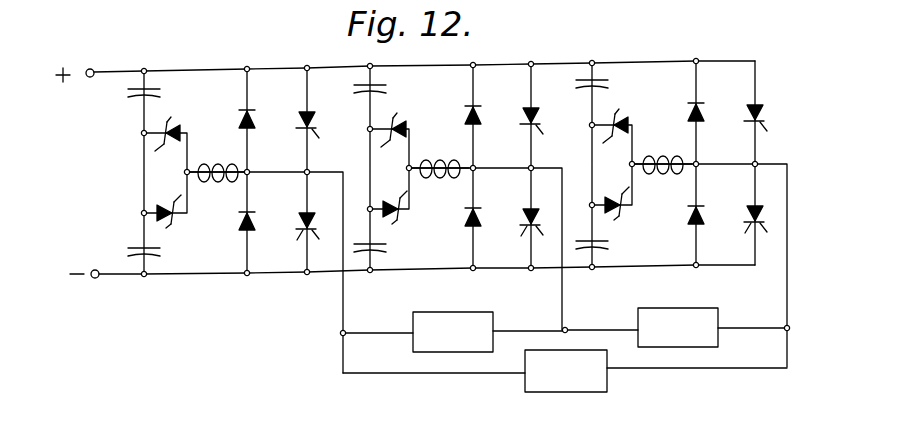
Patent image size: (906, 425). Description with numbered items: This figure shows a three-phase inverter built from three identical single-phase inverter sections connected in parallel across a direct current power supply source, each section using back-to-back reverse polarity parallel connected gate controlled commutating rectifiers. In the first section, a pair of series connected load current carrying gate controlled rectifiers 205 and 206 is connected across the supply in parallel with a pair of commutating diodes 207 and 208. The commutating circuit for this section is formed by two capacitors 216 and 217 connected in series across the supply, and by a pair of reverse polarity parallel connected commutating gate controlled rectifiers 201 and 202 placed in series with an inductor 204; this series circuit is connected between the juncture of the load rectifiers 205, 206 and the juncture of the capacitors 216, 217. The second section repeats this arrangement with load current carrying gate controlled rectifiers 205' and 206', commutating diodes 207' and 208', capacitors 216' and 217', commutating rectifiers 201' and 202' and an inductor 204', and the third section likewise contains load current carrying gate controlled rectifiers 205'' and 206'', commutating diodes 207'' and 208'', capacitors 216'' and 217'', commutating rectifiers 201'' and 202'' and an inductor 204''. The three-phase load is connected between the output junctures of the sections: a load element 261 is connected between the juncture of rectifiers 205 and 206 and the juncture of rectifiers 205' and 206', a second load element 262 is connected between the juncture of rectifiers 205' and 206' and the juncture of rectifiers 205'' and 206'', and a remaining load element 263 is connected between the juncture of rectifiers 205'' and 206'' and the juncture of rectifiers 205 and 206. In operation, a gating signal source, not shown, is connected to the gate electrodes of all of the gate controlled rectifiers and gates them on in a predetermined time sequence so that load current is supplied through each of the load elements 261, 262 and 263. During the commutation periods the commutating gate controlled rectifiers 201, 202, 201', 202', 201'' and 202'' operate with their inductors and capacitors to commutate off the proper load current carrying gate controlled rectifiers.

The commutating gate controlled rectifier 201 is at (179, 125).
The commutating gate controlled rectifier 202 is at (183, 218).
The inductor 204 is at (217, 160).
The load current carrying gate controlled rectifier 205 is at (324, 124).
The load current carrying gate controlled rectifier 206 is at (295, 238).
The commutating diode 207 is at (265, 122).
The commutating diode 208 is at (265, 208).
The capacitor 216 is at (165, 89).
The capacitor 217 is at (168, 252).
The commutating gate controlled rectifier 201' is at (407, 121).
The commutating gate controlled rectifier 202' is at (410, 214).
The inductor 204' is at (439, 156).
The load current carrying gate controlled rectifier 205' is at (549, 116).
The load current carrying gate controlled rectifier 206' is at (521, 232).
The commutating diode 207' is at (491, 103).
The commutating diode 208' is at (491, 203).
The capacitor 216' is at (394, 86).
The capacitor 217' is at (395, 249).
The commutating gate controlled rectifier 201'' is at (628, 116).
The commutating gate controlled rectifier 202'' is at (632, 211).
The inductor 204'' is at (662, 153).
The load current carrying gate controlled rectifier 205'' is at (775, 105).
The load current carrying gate controlled rectifier 206'' is at (742, 231).
The commutating diode 207'' is at (714, 100).
The commutating diode 208'' is at (717, 203).
The capacitor 216'' is at (615, 82).
The capacitor 217'' is at (616, 247).
The load element 261 is at (463, 312).
The load element 262 is at (694, 308).
The load element 263 is at (585, 392).